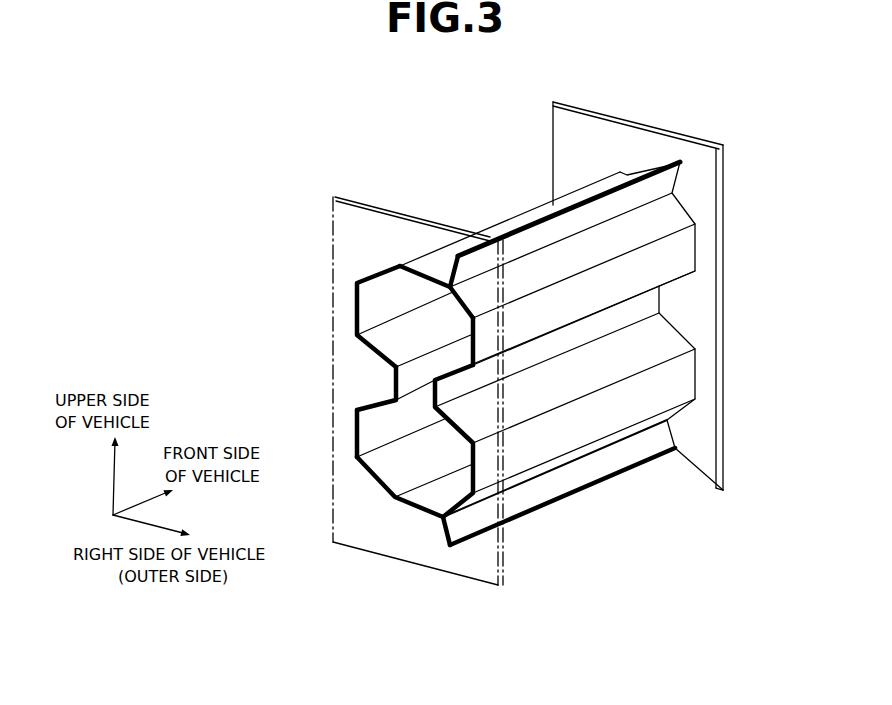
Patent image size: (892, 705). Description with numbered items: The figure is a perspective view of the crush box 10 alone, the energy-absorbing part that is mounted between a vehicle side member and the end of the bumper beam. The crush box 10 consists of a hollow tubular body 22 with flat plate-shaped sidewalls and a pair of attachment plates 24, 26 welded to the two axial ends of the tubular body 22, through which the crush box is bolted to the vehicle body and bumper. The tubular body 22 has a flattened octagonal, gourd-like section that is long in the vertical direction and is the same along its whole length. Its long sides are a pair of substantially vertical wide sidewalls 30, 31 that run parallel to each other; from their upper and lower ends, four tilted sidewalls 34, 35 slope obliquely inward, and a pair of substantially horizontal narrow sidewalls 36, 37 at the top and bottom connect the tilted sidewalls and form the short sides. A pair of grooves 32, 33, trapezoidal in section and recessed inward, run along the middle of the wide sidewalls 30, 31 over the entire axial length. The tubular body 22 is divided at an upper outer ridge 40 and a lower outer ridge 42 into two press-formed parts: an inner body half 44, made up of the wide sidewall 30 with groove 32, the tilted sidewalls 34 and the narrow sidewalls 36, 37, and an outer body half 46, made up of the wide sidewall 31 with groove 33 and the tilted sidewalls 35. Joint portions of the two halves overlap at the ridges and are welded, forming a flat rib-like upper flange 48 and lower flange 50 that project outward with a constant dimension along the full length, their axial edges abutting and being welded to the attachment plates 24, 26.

The crush box 10 is at (376, 110).
The tubular body 22 is at (481, 194).
The attachment plate 24 is at (472, 572).
The attachment plate 26 is at (727, 166).
The wide sidewall 30 is at (355, 432).
The wide sidewall 31 is at (673, 257).
The groove 32 is at (373, 357).
The groove 33 is at (652, 340).
The tilted sidewall 34 is at (372, 277).
The tilted sidewall 35 is at (668, 218).
The narrow sidewall 36 is at (523, 218).
The narrow sidewall 37 is at (412, 513).
The upper outer ridge 40 is at (441, 270).
The lower outer ridge 42 is at (523, 498).
The inner body half 44 is at (331, 322).
The outer body half 46 is at (703, 366).
The upper flange 48 is at (630, 197).
The lower flange 50 is at (565, 483).